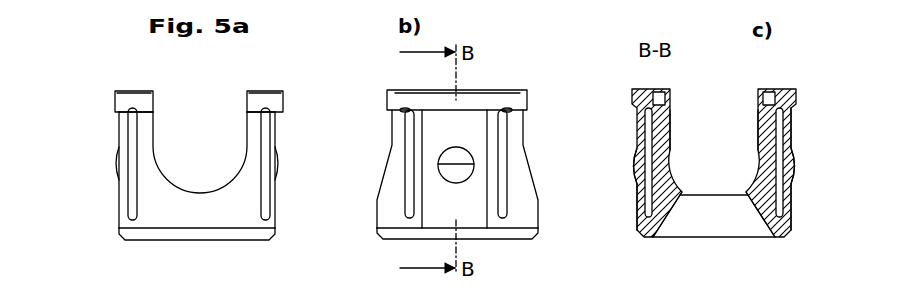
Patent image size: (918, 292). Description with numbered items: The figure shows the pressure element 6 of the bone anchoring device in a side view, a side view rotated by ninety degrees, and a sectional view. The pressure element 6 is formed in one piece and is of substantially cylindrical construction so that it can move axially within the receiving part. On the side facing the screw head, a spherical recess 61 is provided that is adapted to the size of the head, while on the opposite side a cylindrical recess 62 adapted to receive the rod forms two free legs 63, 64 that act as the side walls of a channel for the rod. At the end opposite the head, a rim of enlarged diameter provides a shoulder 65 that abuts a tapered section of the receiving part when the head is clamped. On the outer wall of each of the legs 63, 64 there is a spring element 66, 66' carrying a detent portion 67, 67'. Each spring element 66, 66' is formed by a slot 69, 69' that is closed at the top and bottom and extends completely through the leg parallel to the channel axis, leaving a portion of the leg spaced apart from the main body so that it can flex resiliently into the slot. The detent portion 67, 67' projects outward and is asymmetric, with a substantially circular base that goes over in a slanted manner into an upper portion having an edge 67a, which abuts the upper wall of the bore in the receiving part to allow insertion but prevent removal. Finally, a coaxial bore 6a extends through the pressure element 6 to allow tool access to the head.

In FIG. 5a, the pressure element 6 is at (122, 82).
In FIG. 5b, the pressure element 6 is at (392, 80).
In FIG. 5c, the pressure element 6 is at (630, 86).
In FIG. 5c, the coaxial bore 6a is at (683, 210).
In FIG. 5c, the spherical recess 61 is at (765, 215).
In FIG. 5a, the cylindrical recess 62 is at (243, 118).
In FIG. 5c, the cylindrical recess 62 is at (762, 110).
In FIG. 5a, the free leg 63 is at (148, 128).
In FIG. 5c, the free leg 63 is at (665, 125).
In FIG. 5a, the free leg 64 is at (250, 138).
In FIG. 5c, the free leg 64 is at (757, 138).
In FIG. 5a, the shoulder 65 is at (120, 116).
In FIG. 5b, the shoulder 65 is at (388, 112).
In FIG. 5c, the shoulder 65 is at (637, 114).
In FIG. 5b, the spring element 66 is at (457, 240).
In FIG. 5c, the spring element 66 is at (607, 207).
In FIG. 5c, the spring element 66' is at (825, 207).
In FIG. 5a, the detent portion 67 is at (89, 163).
In FIG. 5b, the detent portion 67 is at (416, 158).
In FIG. 5c, the detent portion 67 is at (604, 166).
In FIG. 5a, the detent portion 67' is at (312, 163).
In FIG. 5c, the detent portion 67' is at (826, 166).
In FIG. 5b, the edge 67a is at (458, 148).
In FIG. 5c, the edge 67a is at (797, 150).
In FIG. 5a, the slot 69 is at (98, 164).
In FIG. 5b, the slot 69 is at (423, 188).
In FIG. 5c, the slot 69 is at (615, 182).
In FIG. 5a, the slot 69' is at (304, 164).
In FIG. 5c, the slot 69' is at (810, 176).